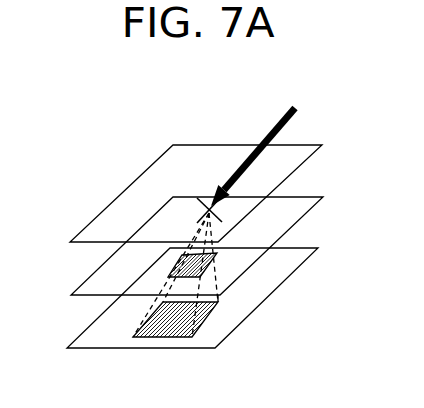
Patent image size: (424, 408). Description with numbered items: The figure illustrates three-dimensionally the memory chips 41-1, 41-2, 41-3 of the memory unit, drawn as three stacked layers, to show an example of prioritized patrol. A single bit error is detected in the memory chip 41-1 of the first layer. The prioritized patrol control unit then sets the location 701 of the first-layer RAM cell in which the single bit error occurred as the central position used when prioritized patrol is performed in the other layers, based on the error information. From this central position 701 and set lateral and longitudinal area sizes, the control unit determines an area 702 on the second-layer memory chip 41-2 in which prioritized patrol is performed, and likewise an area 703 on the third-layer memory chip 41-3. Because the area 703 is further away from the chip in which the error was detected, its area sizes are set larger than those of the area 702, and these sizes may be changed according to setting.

The memory chip of the first layer 41-1 is at (139, 176).
The memory chip of the second layer 41-2 is at (99, 268).
The memory chip of the third layer 41-3 is at (92, 320).
The location of the RAM cell 701 is at (237, 204).
The area 702 is at (213, 263).
The area 703 is at (212, 312).